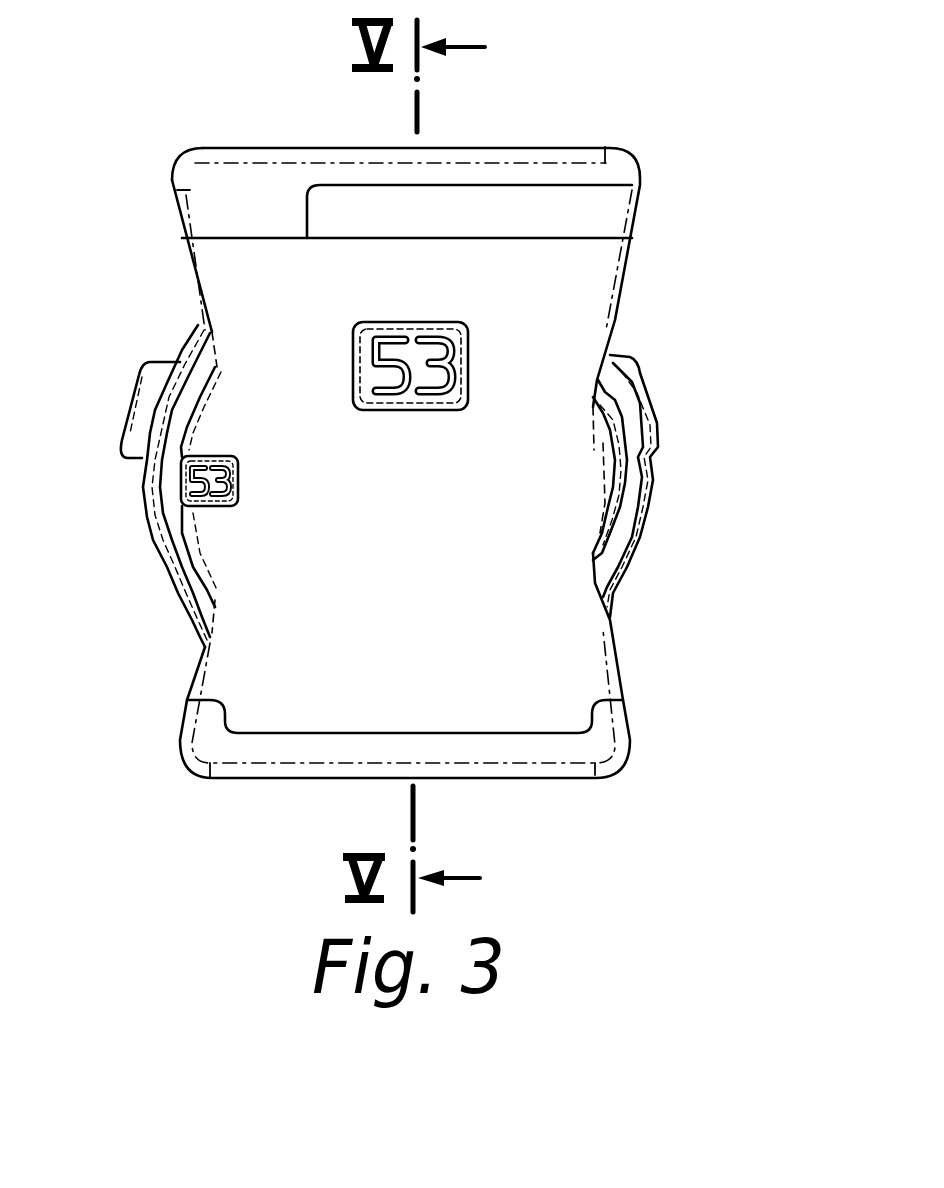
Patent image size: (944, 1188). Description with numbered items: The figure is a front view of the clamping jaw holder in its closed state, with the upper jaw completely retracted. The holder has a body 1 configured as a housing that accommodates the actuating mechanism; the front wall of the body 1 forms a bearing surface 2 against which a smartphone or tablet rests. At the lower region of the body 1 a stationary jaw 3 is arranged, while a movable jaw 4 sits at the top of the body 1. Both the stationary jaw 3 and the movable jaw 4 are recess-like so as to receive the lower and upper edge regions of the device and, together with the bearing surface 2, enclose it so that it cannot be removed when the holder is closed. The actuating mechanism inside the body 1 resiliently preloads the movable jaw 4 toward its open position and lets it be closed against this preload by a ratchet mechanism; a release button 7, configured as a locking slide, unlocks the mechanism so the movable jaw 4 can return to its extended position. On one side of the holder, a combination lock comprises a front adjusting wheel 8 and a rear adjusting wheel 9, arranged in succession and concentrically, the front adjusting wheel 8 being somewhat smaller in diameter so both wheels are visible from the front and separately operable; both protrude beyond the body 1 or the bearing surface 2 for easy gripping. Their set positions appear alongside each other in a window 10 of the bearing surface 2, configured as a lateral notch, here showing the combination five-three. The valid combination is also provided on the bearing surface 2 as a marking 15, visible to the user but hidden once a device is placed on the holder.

The body 1 is at (648, 290).
The bearing surface 2 is at (566, 642).
The stationary jaw 3 is at (588, 742).
The movable jaw 4 is at (588, 205).
The release button 7 is at (155, 397).
The front adjusting wheel 8 is at (172, 481).
The rear adjusting wheel 9 is at (158, 517).
The window 10 is at (240, 483).
The marking 15 is at (412, 395).